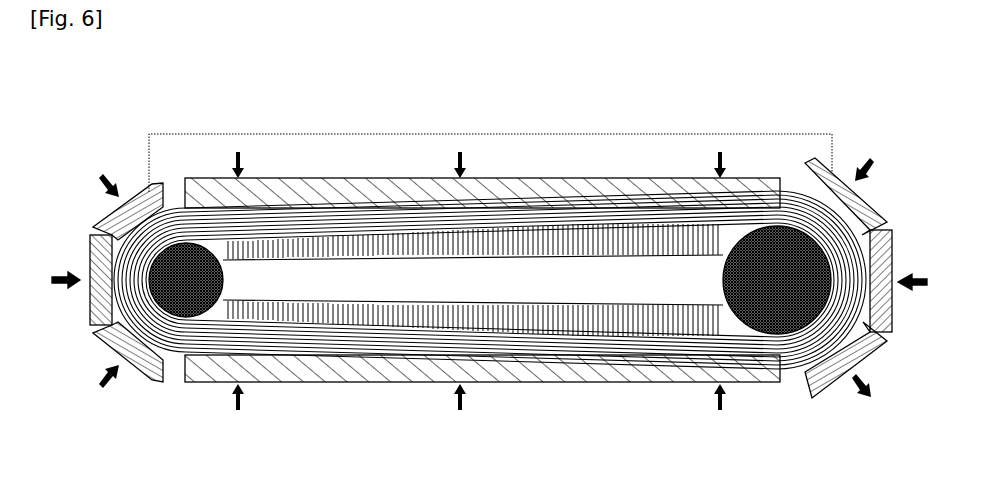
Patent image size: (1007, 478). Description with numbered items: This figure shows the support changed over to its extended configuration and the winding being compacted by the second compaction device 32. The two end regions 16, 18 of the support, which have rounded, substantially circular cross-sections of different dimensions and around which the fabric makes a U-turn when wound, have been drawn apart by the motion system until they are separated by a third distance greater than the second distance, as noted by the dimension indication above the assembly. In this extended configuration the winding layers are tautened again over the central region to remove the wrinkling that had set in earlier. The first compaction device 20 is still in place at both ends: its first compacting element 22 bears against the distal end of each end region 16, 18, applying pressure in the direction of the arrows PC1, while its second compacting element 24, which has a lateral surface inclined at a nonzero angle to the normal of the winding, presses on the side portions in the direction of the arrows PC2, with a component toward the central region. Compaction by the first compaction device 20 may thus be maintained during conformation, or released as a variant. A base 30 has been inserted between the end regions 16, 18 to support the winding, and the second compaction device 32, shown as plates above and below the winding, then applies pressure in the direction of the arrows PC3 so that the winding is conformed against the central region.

The first compaction device 20 is at (110, 152).
The end region 16 is at (165, 296).
The end region 18 is at (800, 300).
The first compacting element 22 is at (90, 308).
The second compacting element 24 is at (150, 182).
The base 30 is at (425, 302).
The second compaction device 32 is at (348, 190).
The compacting pressure direction of the first compacting element PC1 is at (66, 274).
The compacting pressure direction of the second compacting element PC2 is at (100, 184).
The compacting pressure direction of the second compaction device PC3 is at (466, 160).